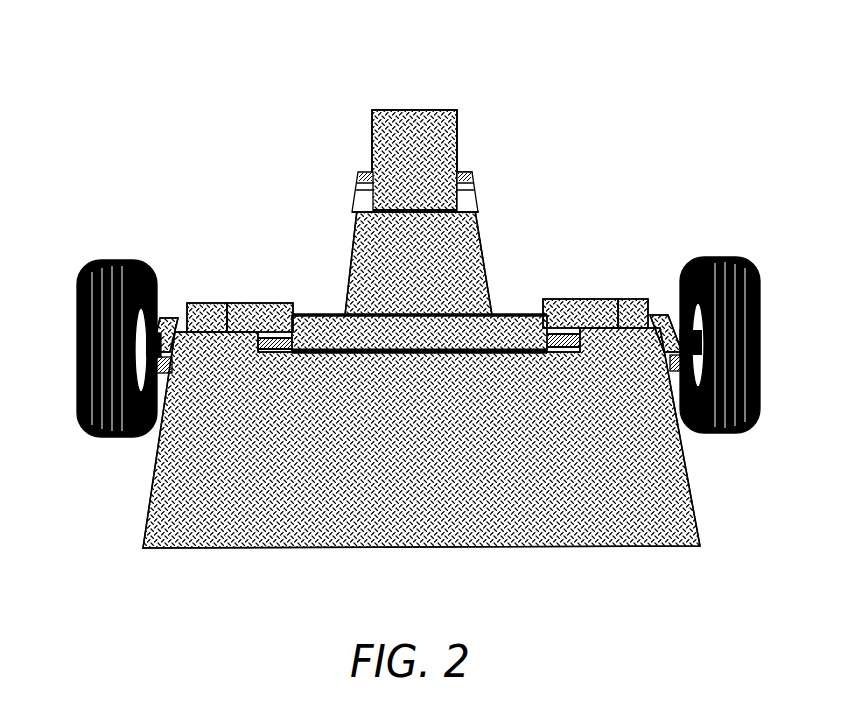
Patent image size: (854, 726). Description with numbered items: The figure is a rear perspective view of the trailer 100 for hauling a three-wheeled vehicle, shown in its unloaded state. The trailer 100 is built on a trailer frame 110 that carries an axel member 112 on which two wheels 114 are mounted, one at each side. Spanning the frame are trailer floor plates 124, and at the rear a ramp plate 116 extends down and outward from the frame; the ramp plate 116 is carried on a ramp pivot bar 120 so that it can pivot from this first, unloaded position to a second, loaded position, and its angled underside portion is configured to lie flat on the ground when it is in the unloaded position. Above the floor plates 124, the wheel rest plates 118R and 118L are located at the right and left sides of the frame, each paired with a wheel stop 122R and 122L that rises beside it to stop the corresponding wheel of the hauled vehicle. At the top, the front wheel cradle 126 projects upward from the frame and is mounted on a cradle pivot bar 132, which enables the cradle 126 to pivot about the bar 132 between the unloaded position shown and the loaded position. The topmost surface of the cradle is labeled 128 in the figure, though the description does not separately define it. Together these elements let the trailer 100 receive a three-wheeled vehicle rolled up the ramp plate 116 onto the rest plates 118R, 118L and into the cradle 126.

The trailer 100 is at (192, 87).
The trailer frame 110 is at (476, 203).
The axel member 112 is at (174, 318).
The wheels 114 is at (112, 262).
The ramp plate 116 is at (699, 506).
The wheel rest plate 118L is at (225, 303).
The wheel rest plate 118R is at (610, 299).
The ramp pivot bar 120 is at (504, 350).
The wheel stop 122L is at (275, 303).
The wheel stop 122R is at (567, 298).
The trailer floor plates 124 is at (326, 318).
The front wheel cradle 126 is at (459, 150).
The top surface 128 is at (412, 109).
The cradle pivot bar 132 is at (358, 188).